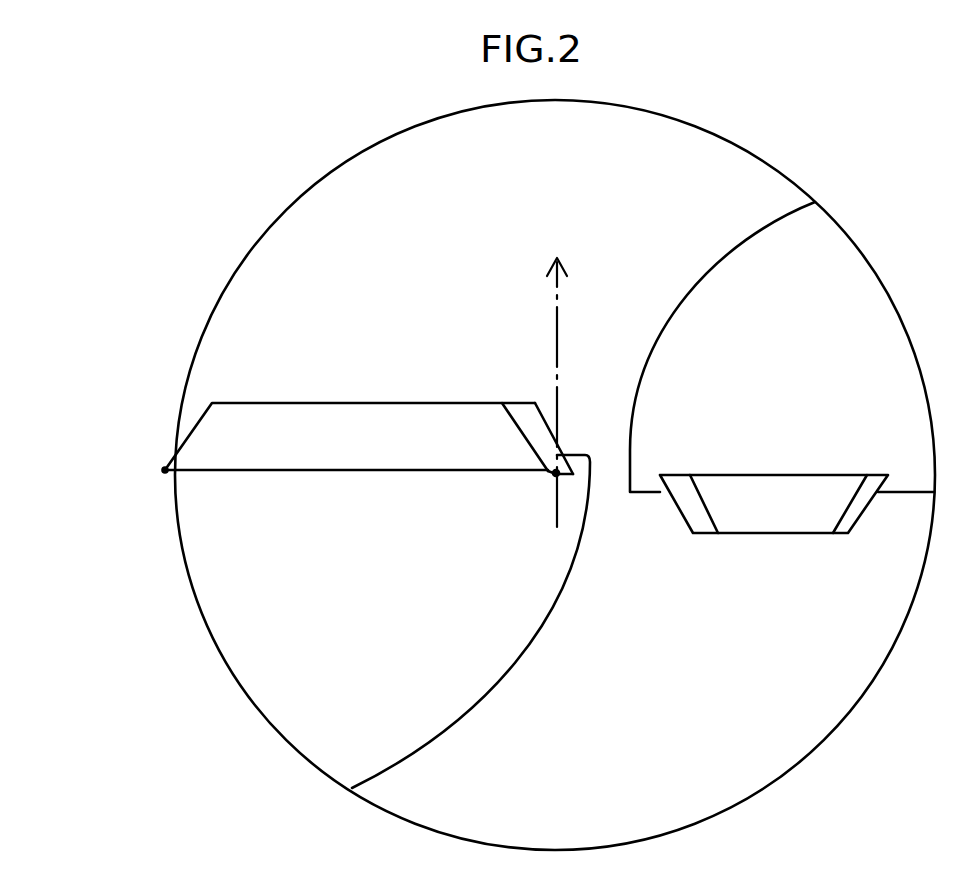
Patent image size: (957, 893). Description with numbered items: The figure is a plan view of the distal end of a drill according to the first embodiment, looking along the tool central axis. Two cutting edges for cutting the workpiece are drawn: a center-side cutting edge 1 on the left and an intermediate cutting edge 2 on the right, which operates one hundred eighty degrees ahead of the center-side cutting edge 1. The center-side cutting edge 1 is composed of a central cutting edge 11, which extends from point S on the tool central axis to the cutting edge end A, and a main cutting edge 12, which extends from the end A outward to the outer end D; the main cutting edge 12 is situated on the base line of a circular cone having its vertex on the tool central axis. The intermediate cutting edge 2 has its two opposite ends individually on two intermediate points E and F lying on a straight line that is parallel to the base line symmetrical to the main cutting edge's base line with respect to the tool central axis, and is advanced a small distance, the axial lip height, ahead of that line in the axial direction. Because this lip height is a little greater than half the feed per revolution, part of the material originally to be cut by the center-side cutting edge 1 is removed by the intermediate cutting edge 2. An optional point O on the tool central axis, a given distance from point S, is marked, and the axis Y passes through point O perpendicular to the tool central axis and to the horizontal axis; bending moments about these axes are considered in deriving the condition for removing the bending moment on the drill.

The center-side cutting edge 1 is at (369, 514).
The central cutting edge 11 is at (556, 475).
The main cutting edge 12 is at (323, 470).
The intermediate cutting edge 2 is at (762, 475).
The outer end D is at (165, 470).
The cutting edge end A is at (556, 473).
The optional point O is at (556, 476).
The intermediate point E is at (687, 475).
The intermediate point F is at (872, 475).
The axis OY Y is at (539, 392).